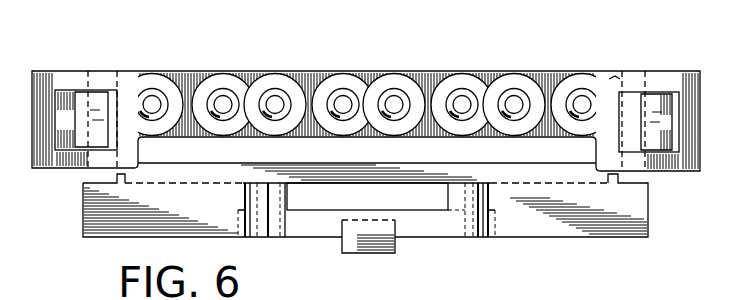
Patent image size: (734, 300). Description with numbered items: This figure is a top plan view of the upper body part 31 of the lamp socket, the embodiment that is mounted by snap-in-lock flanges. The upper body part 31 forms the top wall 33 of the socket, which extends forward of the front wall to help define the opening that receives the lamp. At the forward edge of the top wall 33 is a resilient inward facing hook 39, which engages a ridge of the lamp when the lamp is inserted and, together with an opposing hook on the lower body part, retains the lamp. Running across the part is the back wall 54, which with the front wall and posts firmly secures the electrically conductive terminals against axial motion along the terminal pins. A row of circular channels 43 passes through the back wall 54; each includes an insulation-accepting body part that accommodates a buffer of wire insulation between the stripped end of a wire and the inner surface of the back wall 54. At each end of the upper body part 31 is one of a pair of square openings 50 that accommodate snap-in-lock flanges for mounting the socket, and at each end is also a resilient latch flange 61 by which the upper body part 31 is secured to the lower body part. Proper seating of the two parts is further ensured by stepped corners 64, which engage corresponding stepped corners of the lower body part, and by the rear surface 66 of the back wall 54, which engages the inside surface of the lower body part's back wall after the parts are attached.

The upper body part 31 is at (84, 243).
The top wall 33 is at (212, 217).
The resilient inward facing hook 39 is at (357, 243).
The circular channel 43 is at (225, 105).
The square opening 50 is at (55, 101).
The back wall 54 is at (547, 82).
The resilient latch flange 61 is at (68, 137).
The stepped corner 64 is at (124, 74).
The rear surface 66 is at (424, 68).